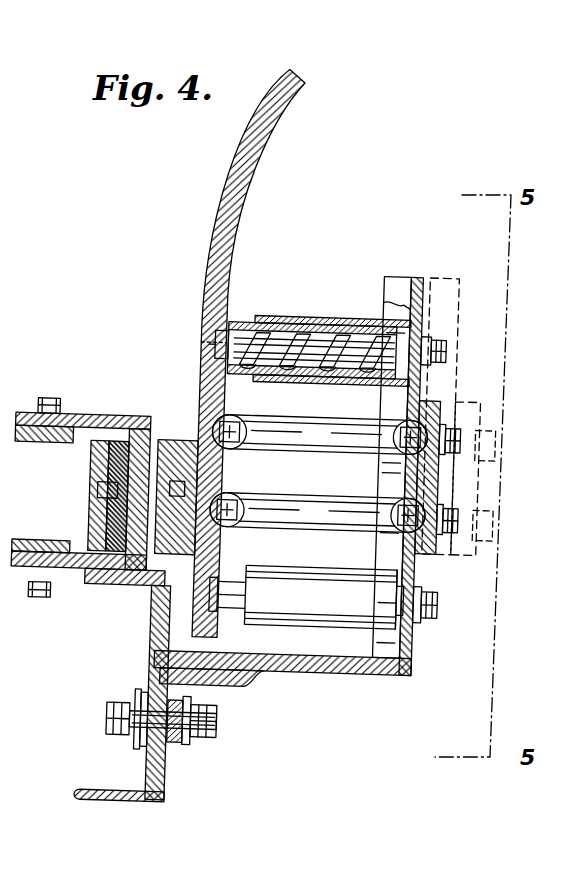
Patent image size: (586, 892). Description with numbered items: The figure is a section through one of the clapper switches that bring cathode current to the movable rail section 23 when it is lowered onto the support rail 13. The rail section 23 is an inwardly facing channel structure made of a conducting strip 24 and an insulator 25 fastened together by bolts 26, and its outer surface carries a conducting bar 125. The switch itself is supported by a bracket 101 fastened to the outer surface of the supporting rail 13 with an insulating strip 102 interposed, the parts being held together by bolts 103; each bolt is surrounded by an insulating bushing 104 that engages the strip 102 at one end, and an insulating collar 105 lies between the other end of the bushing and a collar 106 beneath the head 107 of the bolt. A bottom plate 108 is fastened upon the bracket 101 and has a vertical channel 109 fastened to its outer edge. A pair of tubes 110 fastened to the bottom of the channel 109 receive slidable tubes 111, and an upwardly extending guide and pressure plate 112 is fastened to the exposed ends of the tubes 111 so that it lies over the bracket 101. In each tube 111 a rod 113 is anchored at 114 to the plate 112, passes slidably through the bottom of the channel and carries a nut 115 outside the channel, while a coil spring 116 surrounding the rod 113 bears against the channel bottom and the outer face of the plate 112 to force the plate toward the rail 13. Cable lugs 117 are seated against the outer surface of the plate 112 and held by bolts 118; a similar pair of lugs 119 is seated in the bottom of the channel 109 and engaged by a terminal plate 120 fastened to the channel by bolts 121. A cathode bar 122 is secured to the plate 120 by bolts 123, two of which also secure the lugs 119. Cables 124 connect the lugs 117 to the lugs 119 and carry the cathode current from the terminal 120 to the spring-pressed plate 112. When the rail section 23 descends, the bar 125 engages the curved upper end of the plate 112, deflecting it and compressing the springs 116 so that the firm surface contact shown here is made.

The support rail 13 is at (152, 767).
The rail section 23 is at (80, 421).
The conducting strip 24 is at (95, 477).
The insulator 25 is at (130, 421).
The bolt 26 is at (92, 508).
The bracket 101 is at (262, 688).
The insulating strip 102 is at (172, 798).
The bolt 103 is at (108, 720).
The insulating bushing 104 is at (148, 696).
The insulating collar 105 is at (180, 746).
The collar 106 is at (205, 732).
The head 107 is at (215, 722).
The bottom plate 108 is at (343, 672).
The vertical channel 109 is at (417, 644).
The tube 110 is at (280, 324).
The slidable tube 111 is at (233, 332).
The guide and pressure plate 112 is at (266, 126).
The rod 113 is at (318, 318).
The anchor 114 is at (197, 341).
The nut 115 is at (443, 336).
The coil spring 116 is at (342, 374).
The cable lug 117 is at (235, 420).
The bolt 118 is at (238, 456).
The lug 119 is at (443, 394).
The terminal plate 120 is at (438, 550).
The bolt 121 is at (480, 500).
The cathode bar 122 is at (440, 272).
The bolt 123 is at (498, 541).
The cable 124 is at (336, 502).
The conducting bar 125 is at (172, 444).